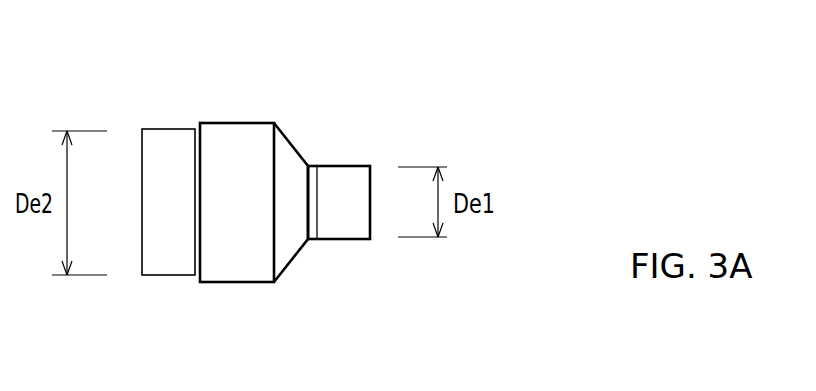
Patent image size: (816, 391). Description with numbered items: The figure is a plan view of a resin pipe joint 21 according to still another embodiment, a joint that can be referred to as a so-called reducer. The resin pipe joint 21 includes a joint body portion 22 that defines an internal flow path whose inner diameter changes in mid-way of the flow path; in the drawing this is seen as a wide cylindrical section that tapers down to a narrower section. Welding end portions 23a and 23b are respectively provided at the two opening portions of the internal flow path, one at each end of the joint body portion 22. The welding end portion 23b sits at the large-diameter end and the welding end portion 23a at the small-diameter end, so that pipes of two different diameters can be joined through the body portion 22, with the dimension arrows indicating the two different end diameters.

The resin pipe joint 21 is at (458, 72).
The joint body portion 22 is at (300, 255).
The welding end portion 23a is at (373, 175).
The welding end portion 23b is at (140, 140).